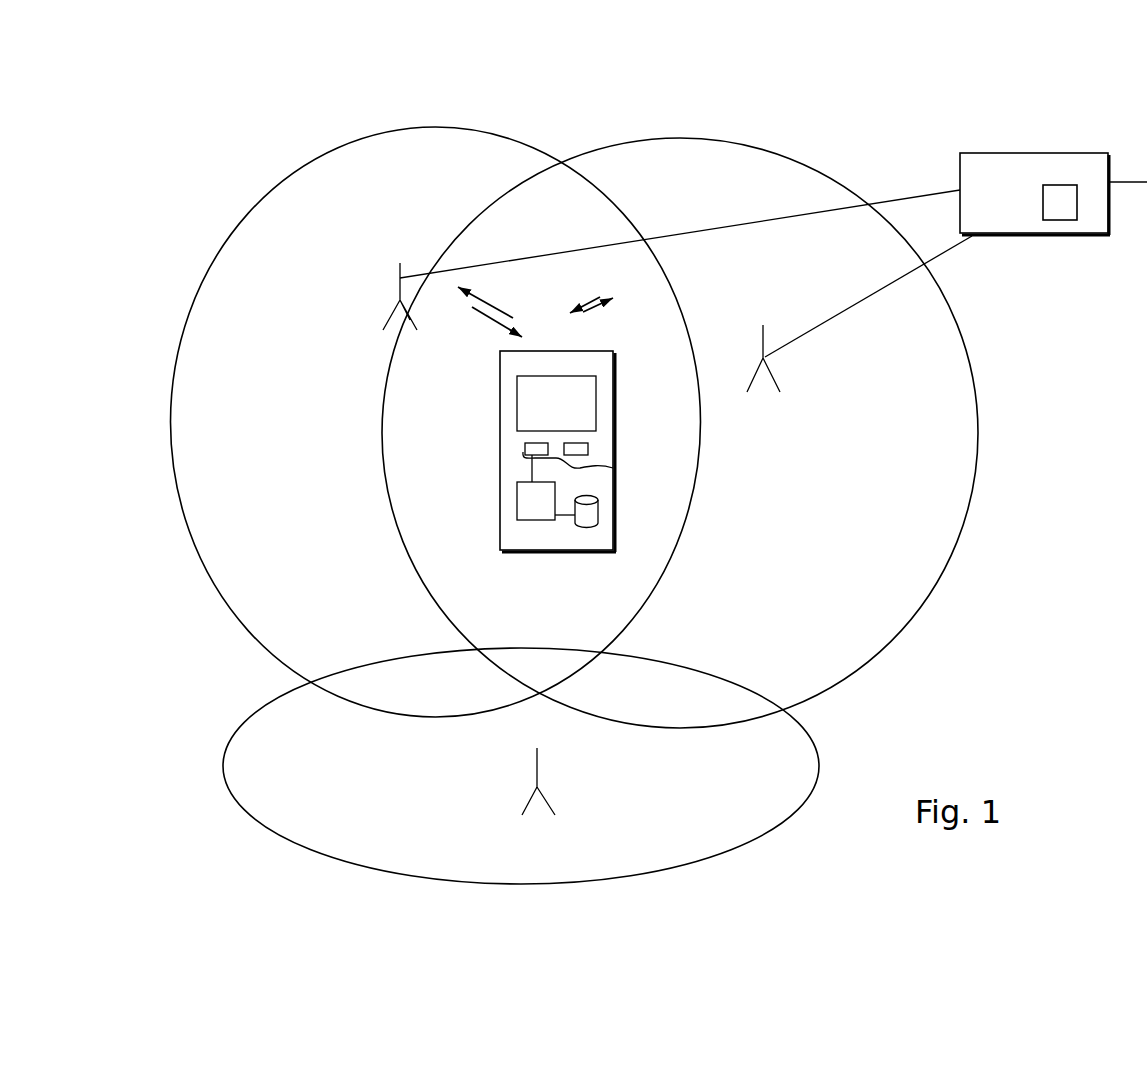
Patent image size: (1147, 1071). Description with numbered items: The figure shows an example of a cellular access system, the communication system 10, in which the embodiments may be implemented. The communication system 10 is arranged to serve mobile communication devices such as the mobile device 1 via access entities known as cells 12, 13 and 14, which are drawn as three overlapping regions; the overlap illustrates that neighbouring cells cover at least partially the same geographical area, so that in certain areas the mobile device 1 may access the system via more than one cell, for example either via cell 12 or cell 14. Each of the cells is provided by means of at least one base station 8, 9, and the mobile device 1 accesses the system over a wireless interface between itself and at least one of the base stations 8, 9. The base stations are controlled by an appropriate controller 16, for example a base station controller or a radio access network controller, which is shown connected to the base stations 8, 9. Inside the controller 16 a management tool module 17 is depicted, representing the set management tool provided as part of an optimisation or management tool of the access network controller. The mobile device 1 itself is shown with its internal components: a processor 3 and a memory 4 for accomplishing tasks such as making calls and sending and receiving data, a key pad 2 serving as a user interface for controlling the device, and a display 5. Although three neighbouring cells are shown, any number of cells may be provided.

The mobile communication device 1 is at (505, 379).
The key pad 2 is at (525, 450).
The processor 3 is at (532, 498).
The memory 4 is at (582, 522).
The display 5 is at (535, 405).
The base station 8 is at (859, 342).
The base station 9 is at (636, 260).
The communication system 10 is at (248, 129).
The cell 12 is at (412, 624).
The cell 13 is at (416, 799).
The cell 14 is at (745, 624).
The controller 16 is at (1004, 194).
The management tool module 17 is at (1060, 202).